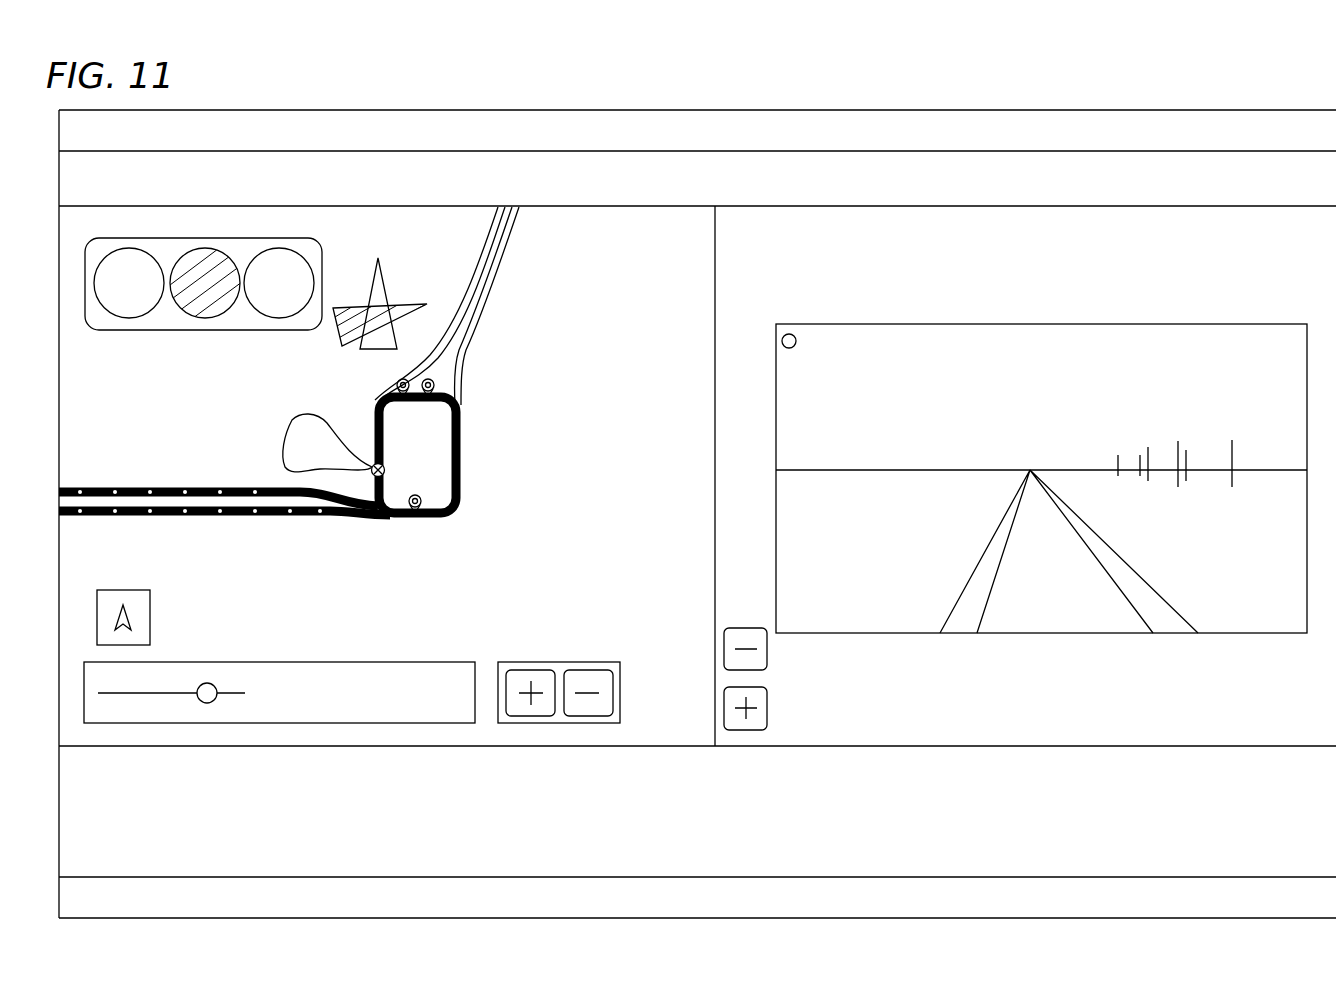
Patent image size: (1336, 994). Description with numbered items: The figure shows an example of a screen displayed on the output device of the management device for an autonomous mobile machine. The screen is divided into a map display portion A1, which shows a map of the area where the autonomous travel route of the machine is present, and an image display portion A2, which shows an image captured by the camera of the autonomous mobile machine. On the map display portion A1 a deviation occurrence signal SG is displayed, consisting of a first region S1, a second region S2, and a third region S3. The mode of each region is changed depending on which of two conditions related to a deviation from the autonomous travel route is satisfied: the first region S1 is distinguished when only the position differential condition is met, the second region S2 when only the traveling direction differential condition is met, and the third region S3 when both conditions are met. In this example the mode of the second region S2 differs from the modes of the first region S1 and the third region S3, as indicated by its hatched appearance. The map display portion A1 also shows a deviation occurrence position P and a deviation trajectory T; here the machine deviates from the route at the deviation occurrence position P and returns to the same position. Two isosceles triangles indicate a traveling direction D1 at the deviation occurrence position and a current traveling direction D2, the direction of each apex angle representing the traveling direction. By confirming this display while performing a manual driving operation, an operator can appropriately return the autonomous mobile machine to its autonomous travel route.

The map display portion A1 is at (567, 207).
The image display portion A2 is at (905, 207).
The deviation occurrence signal SG is at (322, 276).
The first region S1 is at (110, 315).
The second region S2 is at (187, 315).
The third region S3 is at (260, 315).
The traveling direction at the deviation occurrence position D1 is at (385, 278).
The current traveling direction D2 is at (406, 304).
The deviation trajectory T is at (283, 438).
The deviation occurrence position P is at (386, 468).